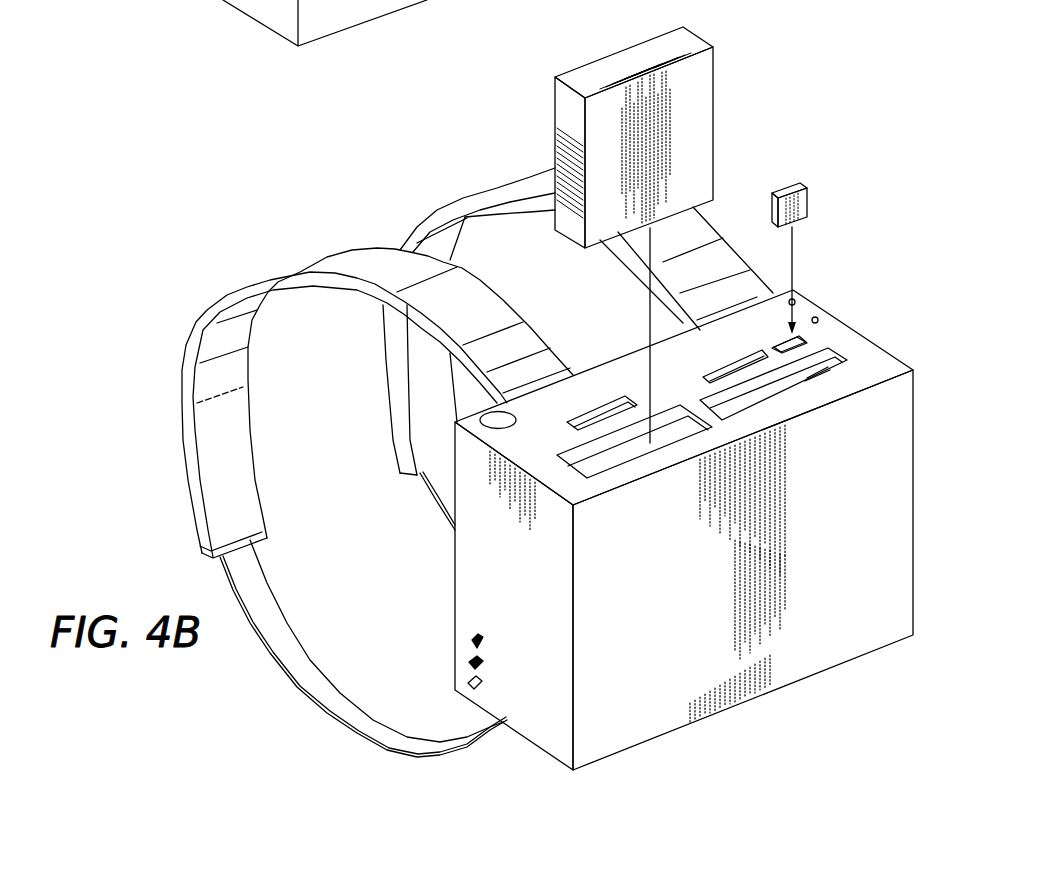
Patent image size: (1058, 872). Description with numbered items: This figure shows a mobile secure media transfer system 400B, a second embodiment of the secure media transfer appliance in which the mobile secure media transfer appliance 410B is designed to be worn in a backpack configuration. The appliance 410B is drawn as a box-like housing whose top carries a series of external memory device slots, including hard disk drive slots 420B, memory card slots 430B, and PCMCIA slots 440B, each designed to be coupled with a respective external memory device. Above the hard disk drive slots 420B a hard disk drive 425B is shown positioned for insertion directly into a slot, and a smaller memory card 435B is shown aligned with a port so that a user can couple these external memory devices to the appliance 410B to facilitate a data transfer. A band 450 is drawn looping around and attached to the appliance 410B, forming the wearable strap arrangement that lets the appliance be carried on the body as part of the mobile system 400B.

The mobile secure media transfer system 400B is at (352, 223).
The mobile secure media transfer appliance 410B is at (810, 665).
The hard disk drive slots 420B is at (597, 417).
The removable module 425B is at (637, 57).
The memory card slots 430B is at (810, 378).
The plug connector 435B is at (787, 188).
The PCMCIA slots 440B is at (798, 340).
The strap 450 is at (470, 198).